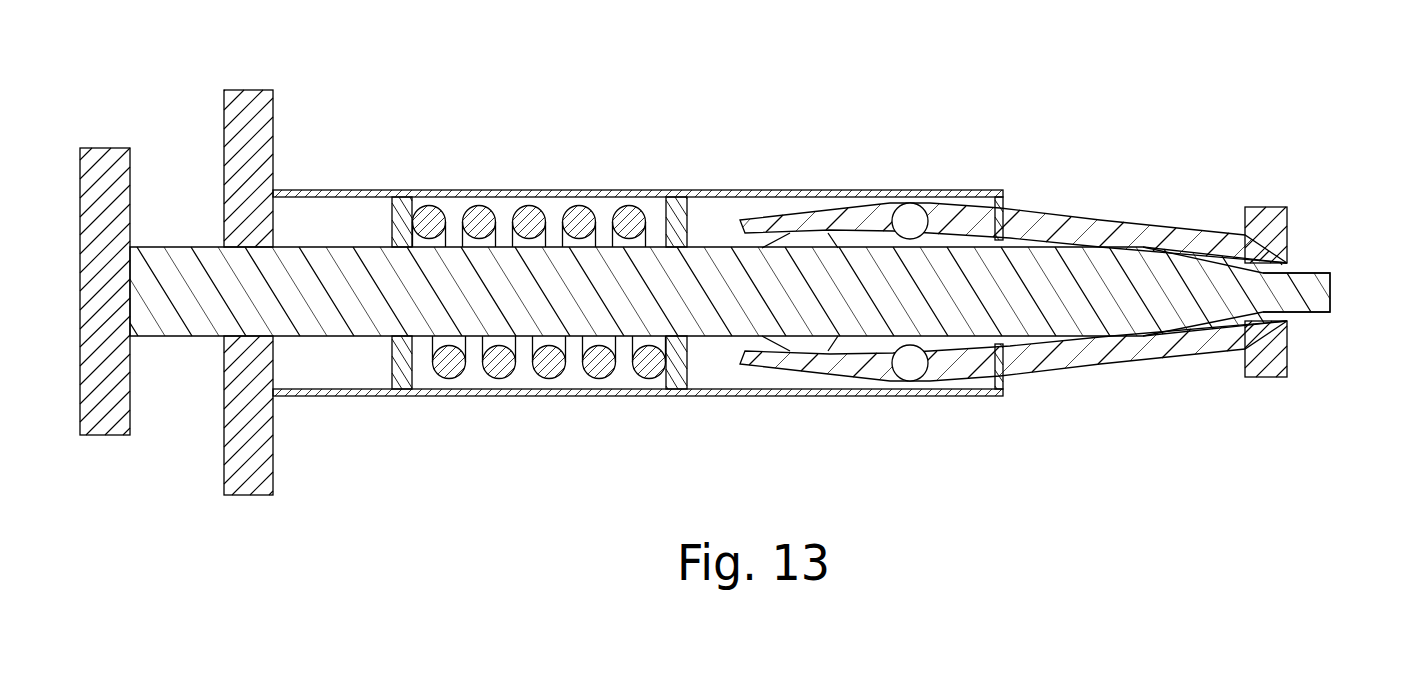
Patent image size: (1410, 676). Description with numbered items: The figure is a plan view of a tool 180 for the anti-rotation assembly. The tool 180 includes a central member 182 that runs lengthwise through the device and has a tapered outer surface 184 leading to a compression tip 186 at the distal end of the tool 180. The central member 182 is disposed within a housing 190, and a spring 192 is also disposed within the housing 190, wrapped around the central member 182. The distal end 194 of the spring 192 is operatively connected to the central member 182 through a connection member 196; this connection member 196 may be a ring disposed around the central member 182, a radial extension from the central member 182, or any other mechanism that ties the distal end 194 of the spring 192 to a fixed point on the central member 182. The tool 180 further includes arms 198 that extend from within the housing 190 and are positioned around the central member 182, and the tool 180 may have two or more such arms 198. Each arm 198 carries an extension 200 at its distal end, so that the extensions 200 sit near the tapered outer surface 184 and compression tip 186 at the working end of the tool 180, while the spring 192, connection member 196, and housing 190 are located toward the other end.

The tool 180 is at (742, 258).
The central member 182 is at (683, 290).
The tapered outer surface 184 is at (1213, 258).
The compression tip 186 is at (1337, 292).
The housing 190 is at (360, 397).
The spring 192 is at (528, 222).
The distal end of spring 194 is at (422, 198).
The connection member 196 is at (403, 198).
The arm 198 is at (1062, 227).
The extension 200 is at (1268, 207).